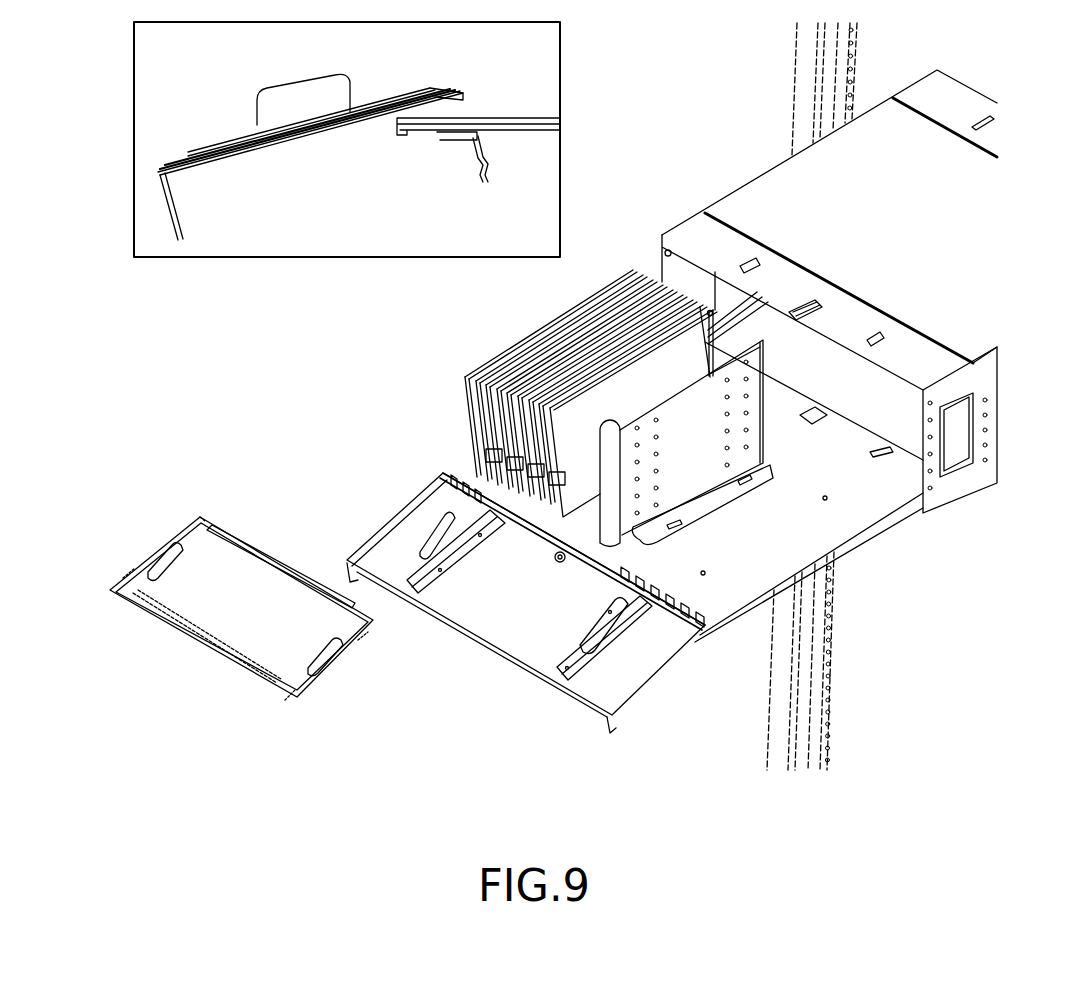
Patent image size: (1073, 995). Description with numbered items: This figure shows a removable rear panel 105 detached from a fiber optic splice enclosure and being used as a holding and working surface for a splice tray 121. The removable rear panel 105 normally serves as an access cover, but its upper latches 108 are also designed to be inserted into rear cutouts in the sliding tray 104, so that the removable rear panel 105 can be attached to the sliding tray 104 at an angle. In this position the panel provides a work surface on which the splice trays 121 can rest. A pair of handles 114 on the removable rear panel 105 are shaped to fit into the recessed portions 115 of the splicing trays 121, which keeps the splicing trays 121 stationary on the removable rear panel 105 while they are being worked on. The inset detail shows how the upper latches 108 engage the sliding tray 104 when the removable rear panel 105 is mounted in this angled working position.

The sliding tray 104 is at (525, 118).
The removable rear panel 105 is at (431, 411).
The upper latches 108 is at (485, 170).
The handles 114 is at (512, 629).
The recessed portions 115 is at (327, 653).
The splice trays 121 is at (241, 554).